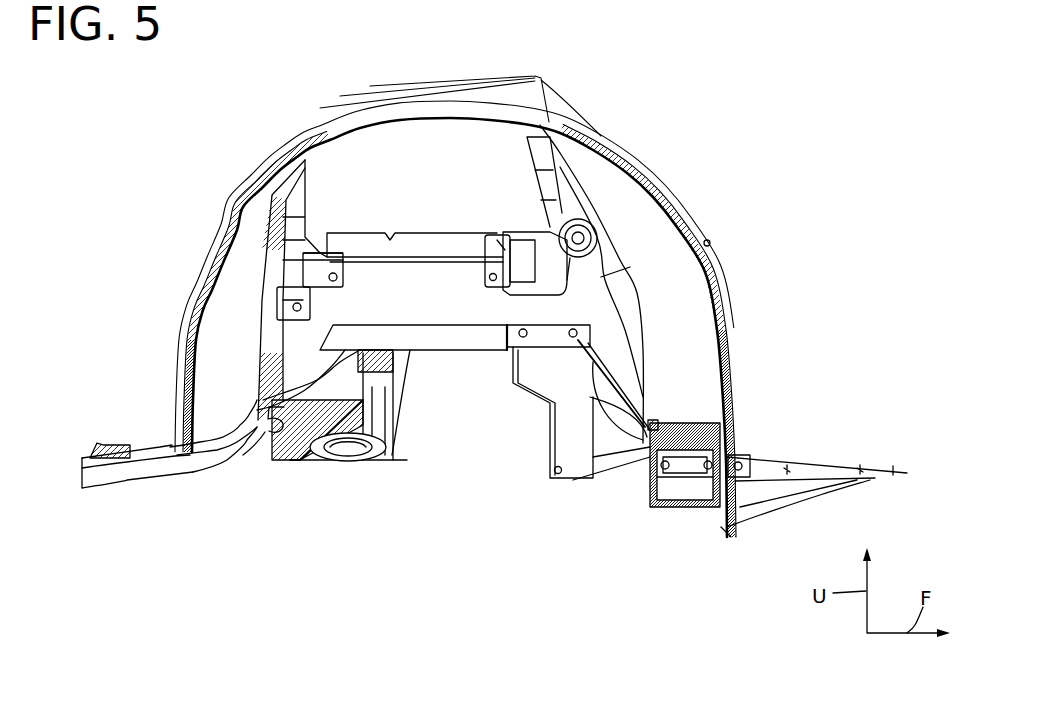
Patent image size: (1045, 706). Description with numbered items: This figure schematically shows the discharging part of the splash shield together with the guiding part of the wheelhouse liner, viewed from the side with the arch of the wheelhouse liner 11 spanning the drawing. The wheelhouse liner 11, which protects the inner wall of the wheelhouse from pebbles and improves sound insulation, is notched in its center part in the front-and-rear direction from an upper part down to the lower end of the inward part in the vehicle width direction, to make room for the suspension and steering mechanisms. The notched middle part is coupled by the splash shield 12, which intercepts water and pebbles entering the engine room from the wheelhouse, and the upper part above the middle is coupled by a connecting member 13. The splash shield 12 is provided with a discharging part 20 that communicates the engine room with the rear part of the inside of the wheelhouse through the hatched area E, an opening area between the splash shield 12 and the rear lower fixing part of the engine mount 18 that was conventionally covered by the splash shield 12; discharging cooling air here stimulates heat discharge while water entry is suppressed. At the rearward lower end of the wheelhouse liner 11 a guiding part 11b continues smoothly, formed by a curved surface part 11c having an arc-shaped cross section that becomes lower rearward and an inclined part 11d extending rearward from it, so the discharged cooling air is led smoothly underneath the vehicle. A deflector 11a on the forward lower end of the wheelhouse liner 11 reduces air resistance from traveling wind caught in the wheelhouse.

The wheelhouse liner 11 is at (675, 288).
The deflector 11a is at (717, 515).
The guiding part 11b is at (254, 468).
The curved surface part 11c is at (207, 458).
The inclined part 11d is at (146, 480).
The splash shield 12 is at (390, 440).
The connecting member 13 is at (423, 232).
The engine mount 18 is at (344, 473).
The discharging part 20 is at (260, 427).
The hatched area E is at (310, 470).